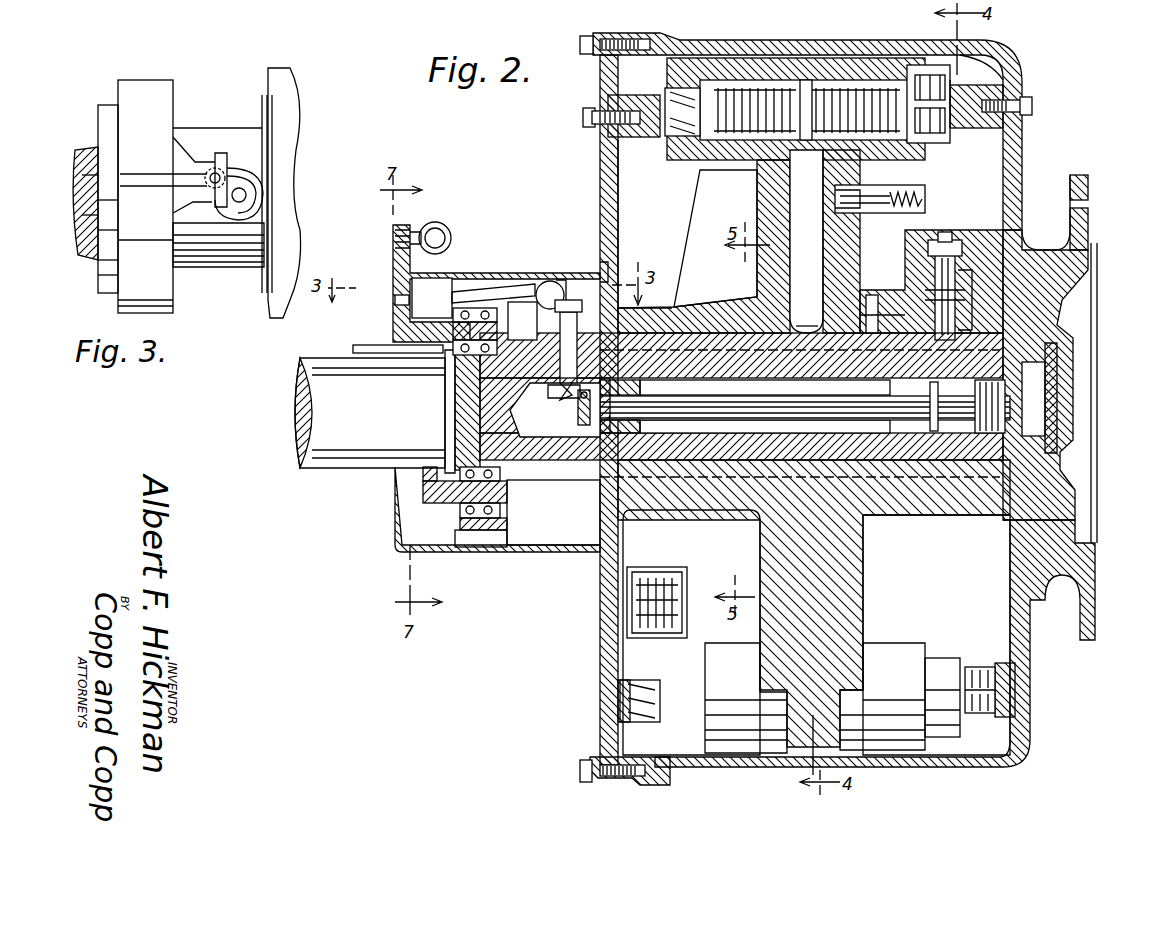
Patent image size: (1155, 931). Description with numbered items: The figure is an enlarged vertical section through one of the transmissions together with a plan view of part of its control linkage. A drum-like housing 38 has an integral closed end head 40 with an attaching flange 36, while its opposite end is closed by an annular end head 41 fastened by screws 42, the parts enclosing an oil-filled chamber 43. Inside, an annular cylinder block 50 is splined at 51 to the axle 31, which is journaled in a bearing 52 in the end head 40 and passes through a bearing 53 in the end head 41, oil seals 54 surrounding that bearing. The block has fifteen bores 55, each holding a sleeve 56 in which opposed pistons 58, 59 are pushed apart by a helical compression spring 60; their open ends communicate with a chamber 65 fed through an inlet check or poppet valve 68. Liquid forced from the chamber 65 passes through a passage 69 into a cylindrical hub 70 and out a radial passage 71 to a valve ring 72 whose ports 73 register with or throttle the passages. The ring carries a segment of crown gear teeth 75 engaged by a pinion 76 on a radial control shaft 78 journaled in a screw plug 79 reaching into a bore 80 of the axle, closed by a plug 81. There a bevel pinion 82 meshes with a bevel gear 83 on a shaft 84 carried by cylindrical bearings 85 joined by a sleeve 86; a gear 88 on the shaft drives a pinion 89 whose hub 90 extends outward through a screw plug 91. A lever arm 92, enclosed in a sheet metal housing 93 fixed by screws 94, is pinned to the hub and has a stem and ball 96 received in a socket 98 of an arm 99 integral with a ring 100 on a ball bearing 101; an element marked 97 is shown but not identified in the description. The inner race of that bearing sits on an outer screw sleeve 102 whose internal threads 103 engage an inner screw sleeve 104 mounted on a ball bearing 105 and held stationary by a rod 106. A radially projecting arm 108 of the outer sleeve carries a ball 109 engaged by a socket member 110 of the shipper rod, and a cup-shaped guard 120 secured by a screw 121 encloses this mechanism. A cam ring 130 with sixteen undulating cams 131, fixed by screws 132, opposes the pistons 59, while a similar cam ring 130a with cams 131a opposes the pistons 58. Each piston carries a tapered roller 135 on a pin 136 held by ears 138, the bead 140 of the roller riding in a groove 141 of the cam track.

In FIG. 3, the axle 31 is at (80, 148).
In FIG. 2, the axle 31 is at (295, 430).
In FIG. 2, the attaching flange 36 is at (1070, 191).
In FIG. 2, the drum-like housing 38 is at (890, 38).
In FIG. 2, the integral closed end head 40 is at (1020, 152).
In FIG. 3, the annular end head 41 is at (268, 78).
In FIG. 2, the annular end head 41 is at (600, 170).
In FIG. 2, the screws 42 is at (607, 34).
In FIG. 2, the chamber 43 is at (630, 182).
In FIG. 2, the annular cylinder block 50 is at (770, 206).
In FIG. 2, the spline 51 is at (818, 330).
In FIG. 2, the bearing 52 is at (965, 505).
In FIG. 2, the bearing 53 is at (691, 632).
In FIG. 2, the oil seals 54 is at (600, 490).
In FIG. 2, the bores or cylinders 55 is at (725, 135).
In FIG. 2, the sleeve 56 is at (940, 148).
In FIG. 2, the piston 58 is at (630, 740).
In FIG. 2, the piston 59 is at (972, 658).
In FIG. 2, the helical compression spring 60 is at (720, 135).
In FIG. 2, the chamber 65 is at (806, 241).
In FIG. 2, the inlet check or poppet valve 68 is at (905, 186).
In FIG. 2, the passage 69 is at (822, 300).
In FIG. 2, the cylindrical hub 70 is at (885, 505).
In FIG. 2, the radial passage 71 is at (868, 305).
In FIG. 2, the valve ring 72 is at (905, 525).
In FIG. 2, the ports 73 is at (875, 295).
In FIG. 2, the segment of crown gear teeth 75 is at (935, 258).
In FIG. 2, the pinion 76 is at (955, 262).
In FIG. 2, the radial control shaft 78 is at (970, 305).
In FIG. 2, the screw plug 79 is at (962, 275).
In FIG. 2, the bore 80 is at (995, 525).
In FIG. 2, the plug 81 is at (1058, 385).
In FIG. 2, the bevel pinion 82 is at (955, 380).
In FIG. 2, the bevel gear 83 is at (930, 405).
In FIG. 2, the shaft 84 is at (808, 403).
In FIG. 2, the cylindrical bearings 85 is at (640, 427).
In FIG. 2, the sleeve 86 is at (741, 365).
In FIG. 2, the gear 88 is at (577, 425).
In FIG. 2, the pinion 89 is at (575, 400).
In FIG. 3, the hub 90 is at (247, 195).
In FIG. 2, the hub 90 is at (544, 401).
In FIG. 3, the screw plug 91 is at (262, 178).
In FIG. 3, the lever arm 92 is at (232, 170).
In FIG. 2, the lever arm 92 is at (578, 325).
In FIG. 2, the cylindrical sheet metal housing 93 is at (510, 280).
In FIG. 2, the screws 94 is at (595, 268).
In FIG. 3, the stem and ball 96 is at (220, 135).
In FIG. 2, the stem and ball 96 is at (522, 321).
In FIG. 2, the pin 97 is at (555, 390).
In FIG. 3, the socket 98 is at (230, 165).
In FIG. 2, the socket 98 is at (560, 284).
In FIG. 3, the arm 99 is at (190, 140).
In FIG. 2, the arm 99 is at (500, 288).
In FIG. 3, the ring 100 is at (160, 82).
In FIG. 2, the ring 100 is at (495, 548).
In FIG. 2, the ball bearing 101 is at (455, 508).
In FIG. 3, the outer screw sleeve 102 is at (108, 106).
In FIG. 2, the outer screw sleeve 102 is at (423, 500).
In FIG. 2, the internal threads 103 is at (460, 436).
In FIG. 2, the inner screw sleeve 104 is at (460, 356).
In FIG. 2, the ball bearing 105 is at (480, 356).
In FIG. 2, the rod 106 is at (380, 354).
In FIG. 2, the radially projecting arm 108 is at (393, 262).
In FIG. 2, the ball 109 is at (445, 228).
In FIG. 2, the socket member 110 is at (448, 238).
In FIG. 2, the cup-shaped sheet metal cap or guard 120 is at (392, 540).
In FIG. 2, the screw 121 is at (393, 305).
In FIG. 2, the cam ring 130 is at (1015, 130).
In FIG. 2, the cam ring 130a is at (600, 133).
In FIG. 2, the undulating cams 131 is at (950, 70).
In FIG. 2, the cams 131a is at (600, 100).
In FIG. 2, the screws 132 is at (1034, 106).
In FIG. 2, the roller 135 is at (960, 128).
In FIG. 2, the pin 136 is at (990, 60).
In FIG. 2, the ears 138 is at (960, 75).
In FIG. 2, the bead 140 is at (1048, 710).
In FIG. 2, the groove 141 is at (672, 85).